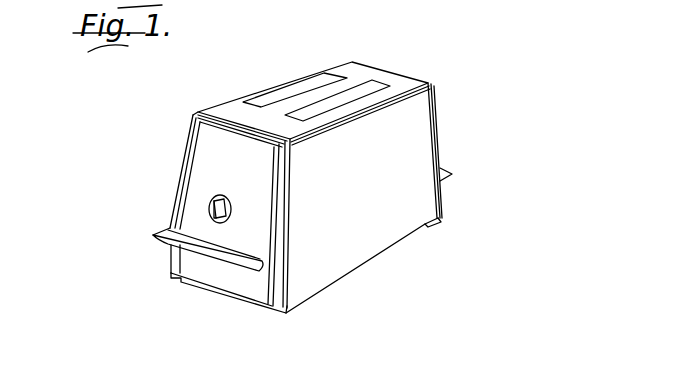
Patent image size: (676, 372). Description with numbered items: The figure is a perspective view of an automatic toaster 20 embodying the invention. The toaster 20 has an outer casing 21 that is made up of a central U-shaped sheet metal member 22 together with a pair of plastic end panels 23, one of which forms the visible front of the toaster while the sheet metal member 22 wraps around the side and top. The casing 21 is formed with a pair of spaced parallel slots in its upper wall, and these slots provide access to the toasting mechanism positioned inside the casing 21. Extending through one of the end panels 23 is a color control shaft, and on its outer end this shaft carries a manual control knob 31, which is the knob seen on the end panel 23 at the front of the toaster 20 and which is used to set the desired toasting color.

The automatic toaster 20 is at (396, 52).
The outer casing 21 is at (332, 103).
The central U-shaped sheet metal member 22 is at (377, 238).
The plastic end panels 23 is at (208, 158).
The manual control knob 31 is at (227, 203).